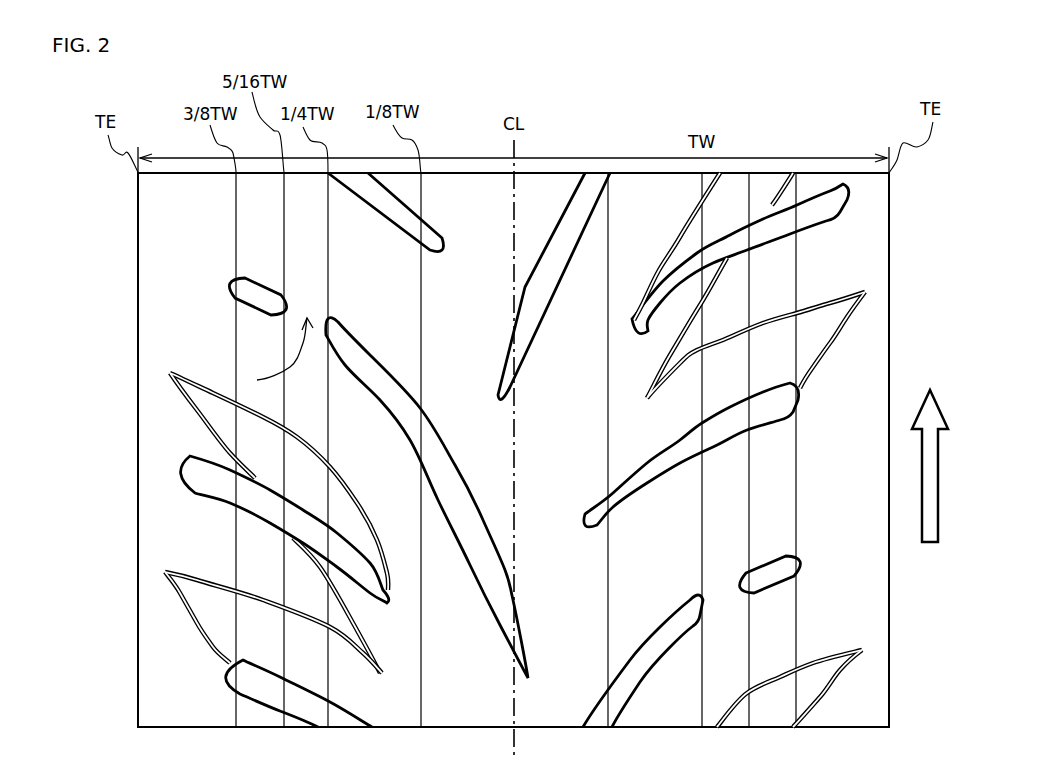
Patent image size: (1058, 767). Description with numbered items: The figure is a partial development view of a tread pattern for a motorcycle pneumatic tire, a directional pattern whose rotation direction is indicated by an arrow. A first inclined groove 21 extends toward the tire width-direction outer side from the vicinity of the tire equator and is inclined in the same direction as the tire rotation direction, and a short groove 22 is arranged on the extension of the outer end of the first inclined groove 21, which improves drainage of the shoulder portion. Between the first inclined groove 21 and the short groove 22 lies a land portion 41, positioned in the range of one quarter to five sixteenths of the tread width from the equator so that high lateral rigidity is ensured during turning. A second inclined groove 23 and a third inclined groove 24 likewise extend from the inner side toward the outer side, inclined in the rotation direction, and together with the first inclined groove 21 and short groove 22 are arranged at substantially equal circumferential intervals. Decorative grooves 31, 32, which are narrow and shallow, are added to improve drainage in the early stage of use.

The first inclined groove 21 is at (370, 367).
The short groove 22 is at (240, 285).
The second inclined groove 23 is at (200, 473).
The third inclined groove 24 is at (247, 679).
The decorative groove 31 is at (197, 410).
The decorative groove 32 is at (177, 595).
The land portion 41 is at (257, 380).